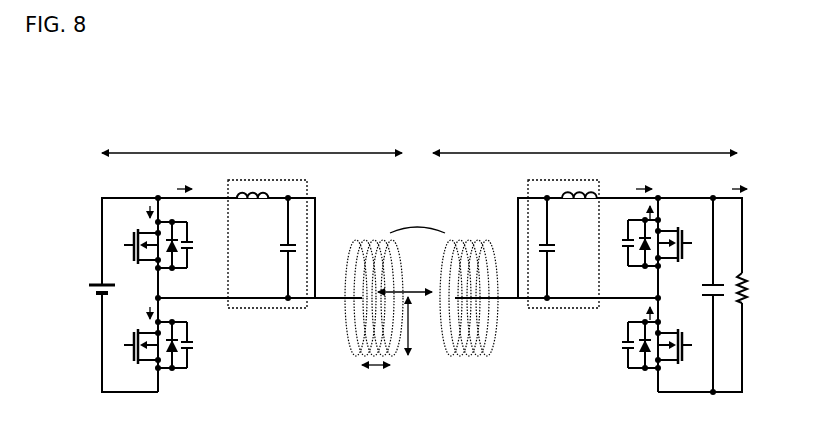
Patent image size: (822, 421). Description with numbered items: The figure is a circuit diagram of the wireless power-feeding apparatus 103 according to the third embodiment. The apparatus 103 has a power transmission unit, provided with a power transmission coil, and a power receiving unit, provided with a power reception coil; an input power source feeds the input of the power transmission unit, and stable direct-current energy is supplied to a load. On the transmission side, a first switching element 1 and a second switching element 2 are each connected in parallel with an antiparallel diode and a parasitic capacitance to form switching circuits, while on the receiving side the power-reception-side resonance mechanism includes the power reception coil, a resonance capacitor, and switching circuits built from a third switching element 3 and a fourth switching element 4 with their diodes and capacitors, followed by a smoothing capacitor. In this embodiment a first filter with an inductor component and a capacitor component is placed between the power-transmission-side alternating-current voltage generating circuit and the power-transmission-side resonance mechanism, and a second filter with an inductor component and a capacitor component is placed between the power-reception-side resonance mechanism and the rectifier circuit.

The wireless power-feeding apparatus 103 is at (681, 88).
The switch Q1 1 is at (150, 345).
The switch Q2 2 is at (150, 245).
The switch Q3 3 is at (663, 345).
The switch Q4 4 is at (663, 243).